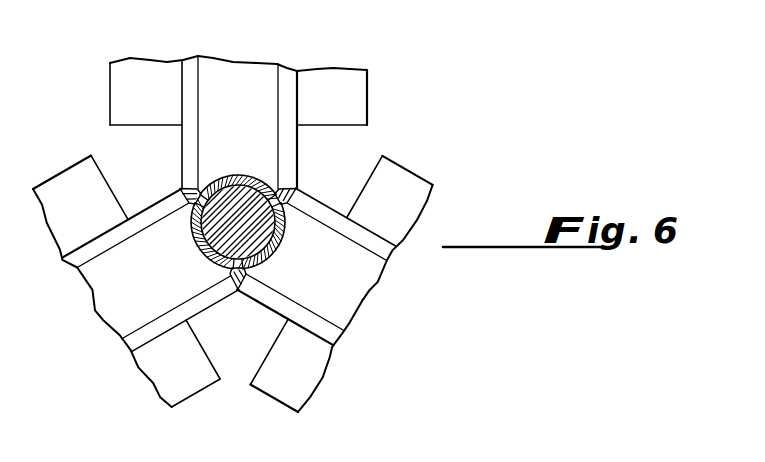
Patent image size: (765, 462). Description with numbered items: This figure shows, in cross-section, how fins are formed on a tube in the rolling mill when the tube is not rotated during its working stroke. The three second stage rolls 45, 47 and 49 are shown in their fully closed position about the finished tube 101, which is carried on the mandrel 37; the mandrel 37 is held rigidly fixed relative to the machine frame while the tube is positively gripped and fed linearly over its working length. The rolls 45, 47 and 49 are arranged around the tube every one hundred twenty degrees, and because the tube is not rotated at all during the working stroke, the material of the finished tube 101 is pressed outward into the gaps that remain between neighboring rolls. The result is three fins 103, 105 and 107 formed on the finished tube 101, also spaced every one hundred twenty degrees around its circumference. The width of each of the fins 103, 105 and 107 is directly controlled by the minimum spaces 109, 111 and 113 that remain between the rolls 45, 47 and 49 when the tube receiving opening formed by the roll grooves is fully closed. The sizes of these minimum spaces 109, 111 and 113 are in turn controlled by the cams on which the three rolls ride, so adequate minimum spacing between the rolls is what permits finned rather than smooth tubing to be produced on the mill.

The mandrel 37 is at (248, 227).
The second stage roll 45 is at (250, 123).
The second stage roll 47 is at (133, 283).
The second stage roll 49 is at (354, 275).
The finished tube 101 is at (212, 180).
The fin 103 is at (285, 200).
The fin 105 is at (243, 276).
The fin 107 is at (190, 197).
The minimum space 109 is at (300, 179).
The minimum space 111 is at (238, 296).
The minimum space 113 is at (179, 185).